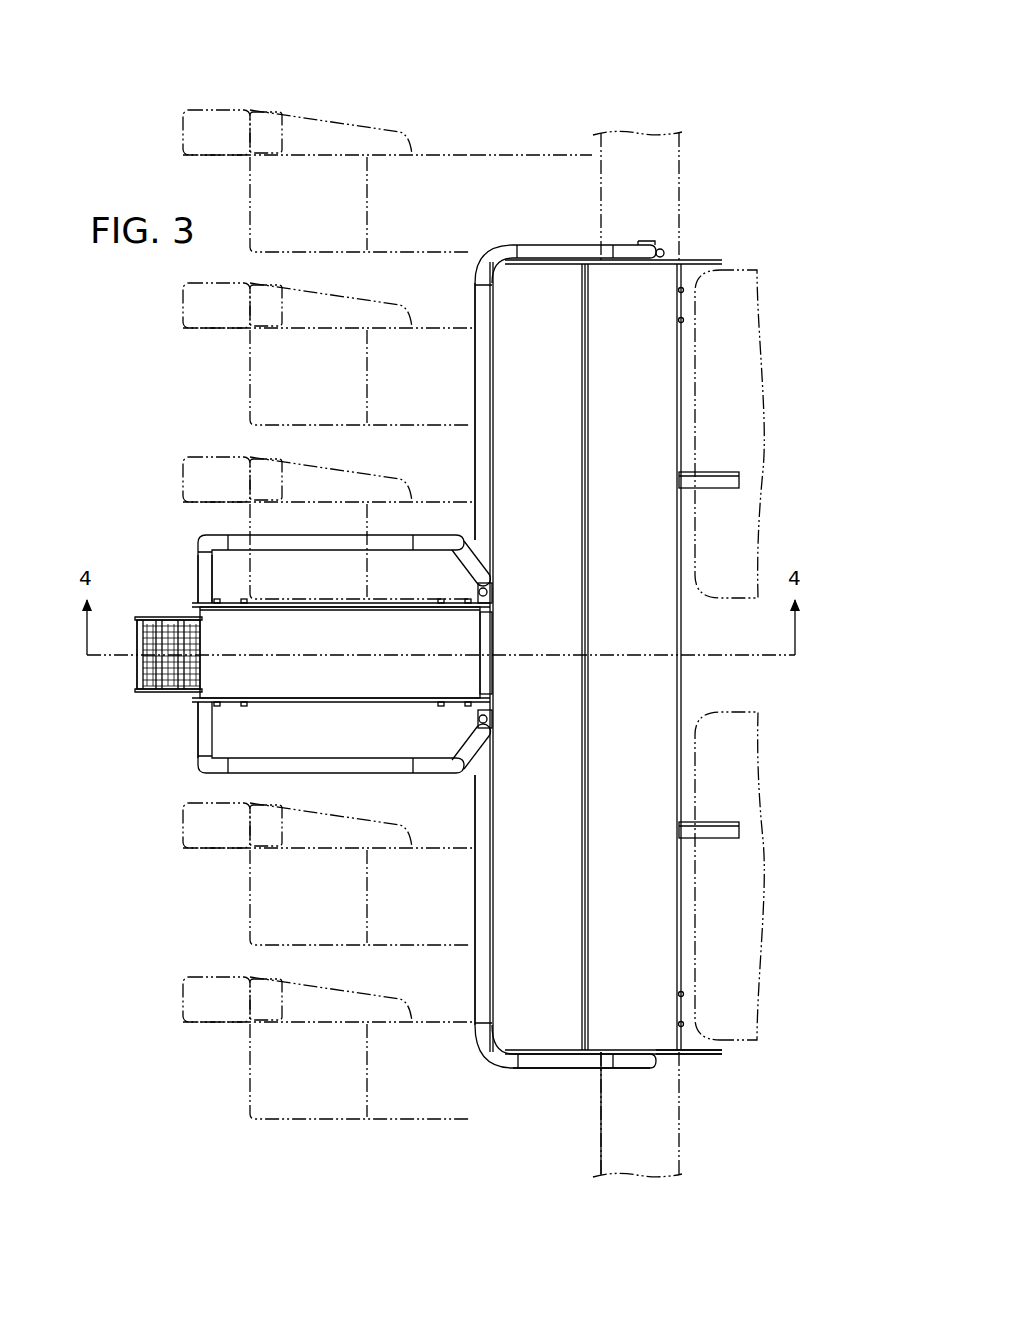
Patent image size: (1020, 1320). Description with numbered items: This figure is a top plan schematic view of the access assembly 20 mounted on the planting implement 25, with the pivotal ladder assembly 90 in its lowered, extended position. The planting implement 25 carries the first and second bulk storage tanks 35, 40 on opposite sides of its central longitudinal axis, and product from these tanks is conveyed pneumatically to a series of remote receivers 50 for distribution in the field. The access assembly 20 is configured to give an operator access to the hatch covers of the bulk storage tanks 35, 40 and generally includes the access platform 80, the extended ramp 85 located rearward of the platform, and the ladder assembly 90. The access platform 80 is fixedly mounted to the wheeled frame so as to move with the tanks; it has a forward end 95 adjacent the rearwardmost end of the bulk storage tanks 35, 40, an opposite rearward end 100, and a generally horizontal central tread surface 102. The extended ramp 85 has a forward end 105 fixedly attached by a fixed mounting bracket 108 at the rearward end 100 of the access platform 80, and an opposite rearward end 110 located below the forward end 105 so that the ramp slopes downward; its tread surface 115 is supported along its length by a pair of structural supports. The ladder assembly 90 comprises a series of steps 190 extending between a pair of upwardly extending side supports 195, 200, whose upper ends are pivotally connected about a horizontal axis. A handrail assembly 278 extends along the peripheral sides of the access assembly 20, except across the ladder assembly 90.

The access assembly 20 is at (104, 708).
The planting implement 25 is at (650, 82).
The first bulk storage tank 35 is at (748, 263).
The second bulk storage tank 40 is at (756, 1054).
The remote receivers 50 is at (243, 1078).
The access platform 80 is at (637, 1093).
The extended ramp 85 is at (347, 742).
The ladder assembly 90 is at (152, 720).
The forward end 95 is at (680, 1064).
The rearward end 100 is at (490, 1085).
The central tread surface 102 is at (640, 899).
The forward end 105 is at (459, 738).
The fixed mounting bracket 108 is at (462, 706).
The rearward end 110 is at (189, 584).
The tread surface 115 is at (372, 686).
The steps 190 is at (138, 676).
The side support 195 is at (158, 616).
The side support 200 is at (155, 692).
The handrail assembly 278 is at (403, 531).